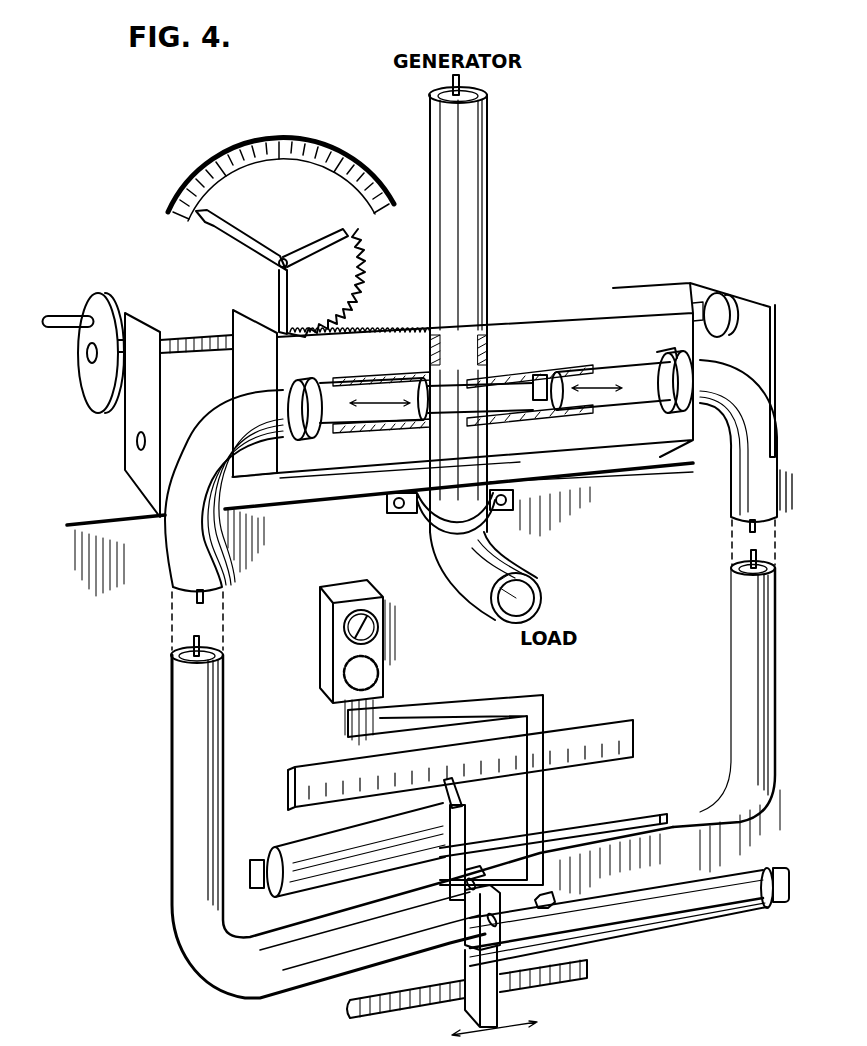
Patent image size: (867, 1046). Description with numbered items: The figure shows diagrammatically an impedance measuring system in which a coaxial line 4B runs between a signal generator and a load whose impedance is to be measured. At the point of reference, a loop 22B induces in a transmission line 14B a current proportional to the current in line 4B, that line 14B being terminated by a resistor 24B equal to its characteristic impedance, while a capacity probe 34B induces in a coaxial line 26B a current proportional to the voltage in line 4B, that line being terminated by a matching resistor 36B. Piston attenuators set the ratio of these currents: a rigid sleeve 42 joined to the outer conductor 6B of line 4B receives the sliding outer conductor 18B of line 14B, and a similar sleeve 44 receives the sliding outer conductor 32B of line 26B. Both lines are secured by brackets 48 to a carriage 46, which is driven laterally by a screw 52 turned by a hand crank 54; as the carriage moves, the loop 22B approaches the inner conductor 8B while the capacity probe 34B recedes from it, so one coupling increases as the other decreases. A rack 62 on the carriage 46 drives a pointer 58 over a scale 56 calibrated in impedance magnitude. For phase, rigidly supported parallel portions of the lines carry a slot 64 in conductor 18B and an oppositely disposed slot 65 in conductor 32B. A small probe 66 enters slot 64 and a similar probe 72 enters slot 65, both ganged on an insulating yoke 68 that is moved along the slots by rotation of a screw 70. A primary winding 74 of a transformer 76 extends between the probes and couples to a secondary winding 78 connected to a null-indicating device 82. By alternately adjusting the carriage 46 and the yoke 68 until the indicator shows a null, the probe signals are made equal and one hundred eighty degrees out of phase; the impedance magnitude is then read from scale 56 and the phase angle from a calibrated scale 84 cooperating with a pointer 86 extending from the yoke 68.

The coaxial line 4B is at (506, 170).
The outer conductor 6B is at (486, 96).
The inner conductor 8B is at (527, 598).
The transmission line 14B is at (720, 593).
The outer conductor 18B is at (537, 418).
The loop 22B is at (535, 392).
The resistor 24B is at (248, 862).
The coaxial line 26B is at (160, 680).
The outer conductor 32B is at (402, 435).
The capacity probe 34B is at (424, 377).
The resistor 36B is at (780, 905).
The sleeve 42 is at (545, 372).
The sleeve 44 is at (372, 378).
The carriage 46 is at (528, 320).
The brackets 48 is at (300, 384).
The screw 52 is at (194, 340).
The hand crank 54 is at (62, 316).
The scale 56 is at (320, 128).
The pointer 58 is at (257, 241).
The rack 62 is at (368, 325).
The slot 64 is at (640, 818).
The slot 65 is at (545, 906).
The probe 66 is at (446, 880).
The insulating yoke 68 is at (500, 1014).
The screw 70 is at (420, 1012).
The probe 72 is at (500, 920).
The primary winding 74 is at (450, 901).
The transformer 76 is at (472, 878).
The secondary winding 78 is at (486, 891).
The null-indicating device 82 is at (401, 629).
The calibrated scale 84 is at (636, 737).
The pointer 86 is at (436, 796).